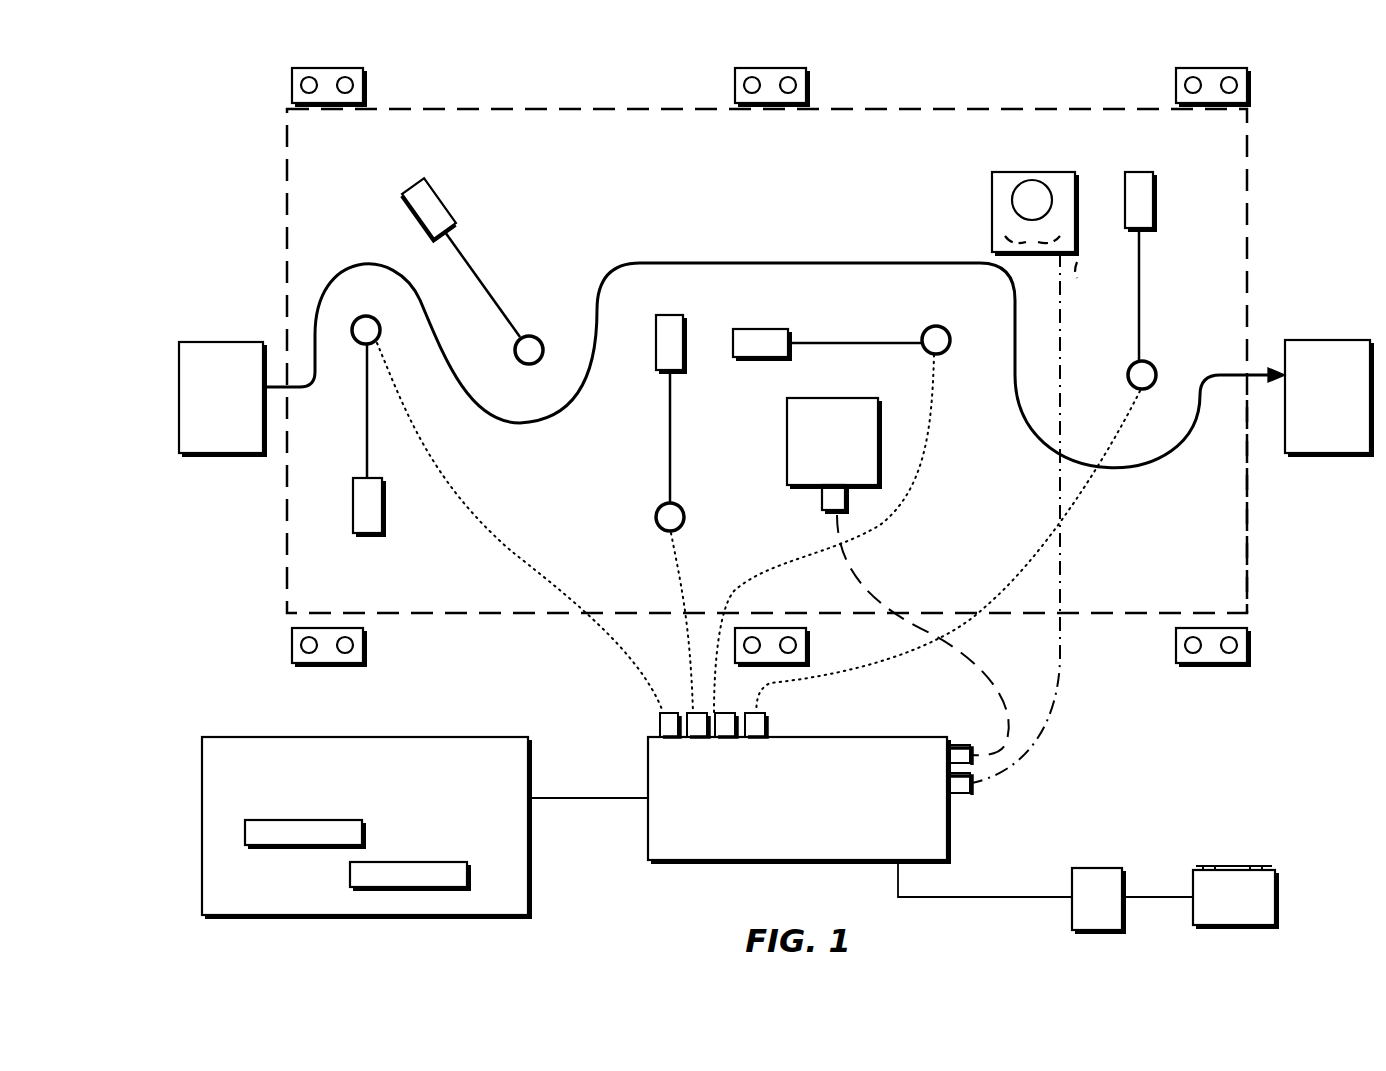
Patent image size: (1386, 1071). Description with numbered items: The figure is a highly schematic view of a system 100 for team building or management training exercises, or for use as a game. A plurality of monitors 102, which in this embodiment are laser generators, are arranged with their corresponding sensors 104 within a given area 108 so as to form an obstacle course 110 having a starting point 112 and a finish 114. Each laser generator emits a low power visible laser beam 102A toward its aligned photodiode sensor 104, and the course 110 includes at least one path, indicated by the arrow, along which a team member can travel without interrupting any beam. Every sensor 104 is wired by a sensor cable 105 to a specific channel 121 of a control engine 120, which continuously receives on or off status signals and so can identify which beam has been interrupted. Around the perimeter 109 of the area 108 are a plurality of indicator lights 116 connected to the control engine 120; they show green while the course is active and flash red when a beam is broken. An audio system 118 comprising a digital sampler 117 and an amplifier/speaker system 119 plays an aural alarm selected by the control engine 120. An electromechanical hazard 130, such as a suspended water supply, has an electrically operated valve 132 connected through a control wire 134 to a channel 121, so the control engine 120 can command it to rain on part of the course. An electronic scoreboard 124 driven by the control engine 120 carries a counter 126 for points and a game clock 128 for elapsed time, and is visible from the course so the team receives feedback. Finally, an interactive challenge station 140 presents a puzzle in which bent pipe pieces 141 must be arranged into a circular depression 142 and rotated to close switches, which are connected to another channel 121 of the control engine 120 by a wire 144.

The system 100 is at (1298, 175).
The monitor 102 is at (432, 190).
The laser beam 102A is at (477, 273).
The sensor 104 is at (358, 316).
The sensor cable 105 is at (513, 543).
The area 108 is at (287, 489).
The perimeter 109 is at (1250, 512).
The obstacle course 110 is at (756, 166).
The starting point 112 is at (205, 440).
The finish 114 is at (1310, 440).
The indicator light 116 is at (292, 88).
The digital sampler 117 is at (1085, 868).
The audio system 118 is at (1008, 911).
The amplifier/speaker system 119 is at (1278, 888).
The control engine 120 is at (648, 842).
The channel 121 is at (660, 720).
The electronic scoreboard 124 is at (221, 902).
The counter 126 is at (245, 838).
The game clock 128 is at (362, 889).
The electromechanical hazard 130 is at (842, 398).
The valve 132 is at (822, 508).
The control wire 134 is at (878, 588).
The interactive challenge station 140 is at (1068, 172).
The bent pipe pieces 141 is at (995, 240).
The circular depression 142 is at (1032, 180).
The wire 144 is at (1063, 322).